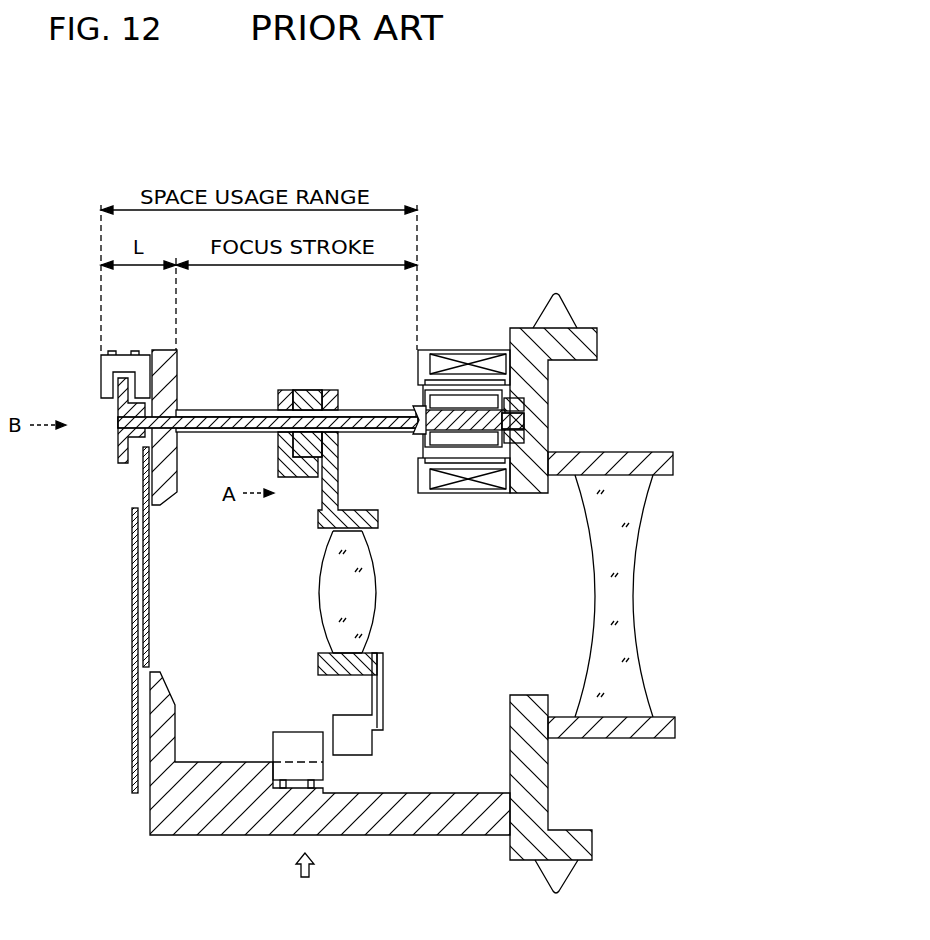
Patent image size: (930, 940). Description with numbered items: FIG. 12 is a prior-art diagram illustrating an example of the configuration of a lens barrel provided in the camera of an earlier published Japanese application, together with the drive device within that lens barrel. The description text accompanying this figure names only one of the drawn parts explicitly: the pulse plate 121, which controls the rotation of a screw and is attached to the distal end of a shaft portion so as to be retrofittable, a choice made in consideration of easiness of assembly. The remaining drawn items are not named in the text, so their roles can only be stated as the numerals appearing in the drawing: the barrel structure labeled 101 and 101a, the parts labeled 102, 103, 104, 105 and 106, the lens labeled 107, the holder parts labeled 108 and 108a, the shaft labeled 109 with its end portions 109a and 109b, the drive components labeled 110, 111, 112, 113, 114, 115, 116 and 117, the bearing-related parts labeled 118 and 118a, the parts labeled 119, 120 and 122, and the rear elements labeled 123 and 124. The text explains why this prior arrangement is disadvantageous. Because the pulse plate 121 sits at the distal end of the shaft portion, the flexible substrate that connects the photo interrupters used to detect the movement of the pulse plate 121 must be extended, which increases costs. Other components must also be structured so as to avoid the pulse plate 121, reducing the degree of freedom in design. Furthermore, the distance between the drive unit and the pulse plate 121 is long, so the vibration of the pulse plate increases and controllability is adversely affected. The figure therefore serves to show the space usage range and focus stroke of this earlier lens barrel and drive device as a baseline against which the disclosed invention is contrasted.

The lens barrel 101 is at (230, 834).
The wall portion of lens barrel 101a is at (178, 413).
The mount member 102 is at (530, 335).
The bayonet claw 103 is at (575, 318).
The optical axis direction arrow 104 is at (304, 884).
The flexible printed board 105 is at (132, 680).
The cover plate 106 is at (150, 560).
The focus lens 107 is at (320, 600).
The lens holder 108 is at (365, 510).
The bearing holding portion 108a is at (284, 388).
The screw shaft 109 is at (375, 420).
The shaft end portion 109a is at (515, 421).
The shaft end portion 109b is at (232, 408).
The coil 110 is at (455, 372).
The rotor magnet 111 is at (480, 392).
The coil 112 is at (467, 494).
The stator yoke 113 is at (427, 350).
The flange portion 114 is at (560, 350).
The yoke 115 is at (428, 494).
The yoke 116 is at (499, 494).
The bearing 117 is at (528, 405).
The bearing 118 is at (303, 392).
The bearing fixing portion 118a is at (324, 390).
The rack 119 is at (370, 740).
The position sensor 120 is at (320, 771).
The pulse plate 121 is at (119, 445).
The cover member 122 is at (101, 377).
The rear lens 123 is at (636, 535).
The lens holding flange 124 is at (668, 455).